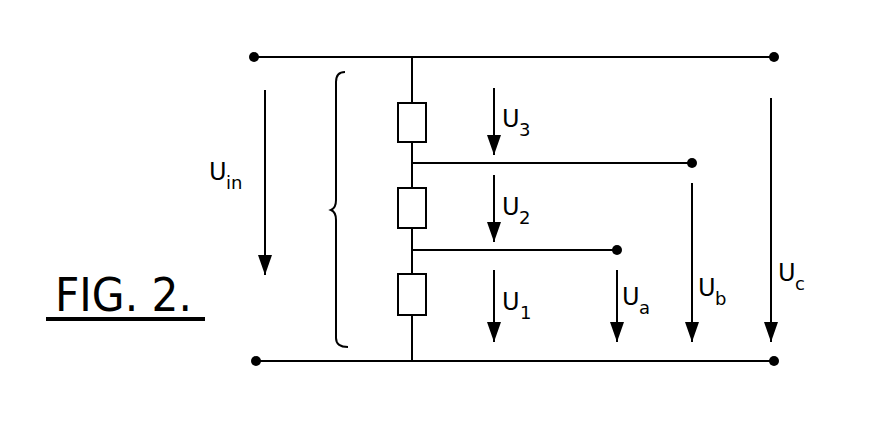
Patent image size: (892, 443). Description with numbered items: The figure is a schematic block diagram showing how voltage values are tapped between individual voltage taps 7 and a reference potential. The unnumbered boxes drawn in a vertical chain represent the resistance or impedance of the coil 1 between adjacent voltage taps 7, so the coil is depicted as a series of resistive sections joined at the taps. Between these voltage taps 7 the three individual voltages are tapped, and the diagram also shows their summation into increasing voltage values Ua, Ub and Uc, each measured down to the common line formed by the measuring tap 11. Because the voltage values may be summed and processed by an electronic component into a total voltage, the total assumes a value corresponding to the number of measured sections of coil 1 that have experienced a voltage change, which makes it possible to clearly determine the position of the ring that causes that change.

The measuring coil 1 is at (371, 209).
The voltage taps 7 is at (775, 53).
The measuring tap 11 is at (722, 362).